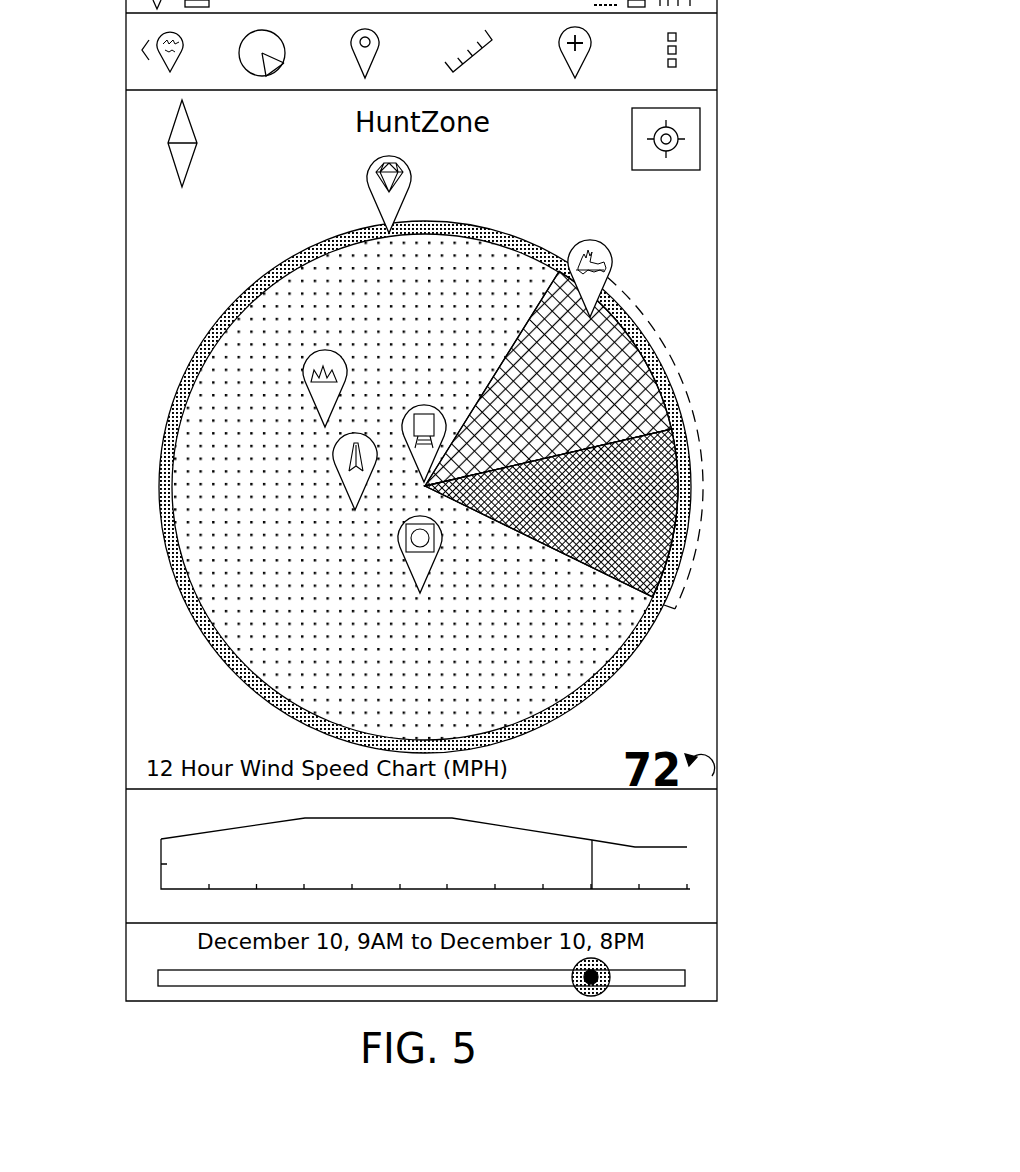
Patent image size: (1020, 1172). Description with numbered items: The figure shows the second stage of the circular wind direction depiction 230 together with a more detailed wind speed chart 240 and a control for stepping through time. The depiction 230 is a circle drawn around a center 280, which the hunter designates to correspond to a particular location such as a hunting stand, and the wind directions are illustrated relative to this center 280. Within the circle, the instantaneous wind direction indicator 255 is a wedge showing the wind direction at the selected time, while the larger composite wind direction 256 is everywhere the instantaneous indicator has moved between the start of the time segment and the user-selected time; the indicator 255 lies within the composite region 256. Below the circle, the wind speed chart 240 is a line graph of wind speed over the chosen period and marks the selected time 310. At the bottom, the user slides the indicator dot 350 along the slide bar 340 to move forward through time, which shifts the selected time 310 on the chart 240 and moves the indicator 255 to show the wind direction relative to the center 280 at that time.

The circular wind direction depiction 230 is at (512, 278).
The instantaneous wind direction indicator 255 is at (680, 508).
The composite wind direction 256 is at (685, 375).
The center 280 is at (425, 486).
The wind speed chart 240 is at (120, 792).
The selected time 310 is at (592, 862).
The slide bar 340 is at (680, 978).
The indicator dot 350 is at (607, 963).